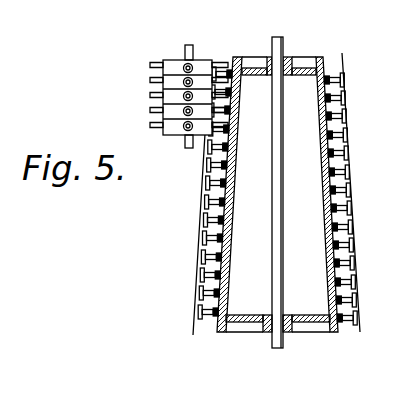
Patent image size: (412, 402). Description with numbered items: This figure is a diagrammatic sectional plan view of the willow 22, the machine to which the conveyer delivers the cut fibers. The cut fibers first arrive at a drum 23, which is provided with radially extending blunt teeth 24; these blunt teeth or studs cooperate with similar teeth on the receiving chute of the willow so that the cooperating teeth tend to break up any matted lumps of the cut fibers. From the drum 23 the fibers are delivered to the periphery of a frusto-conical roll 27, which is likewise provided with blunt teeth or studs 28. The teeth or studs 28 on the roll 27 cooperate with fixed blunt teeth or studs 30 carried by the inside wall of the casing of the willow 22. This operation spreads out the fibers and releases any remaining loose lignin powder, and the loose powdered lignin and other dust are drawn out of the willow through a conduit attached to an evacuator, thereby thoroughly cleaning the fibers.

The willow 22 is at (242, 43).
The drum 23 is at (175, 60).
The radially extending blunt teeth 24 is at (152, 126).
The frusto-conical roll 27 is at (320, 327).
The blunt teeth or studs 28 is at (233, 153).
The fixed blunt teeth or studs 30 is at (322, 125).